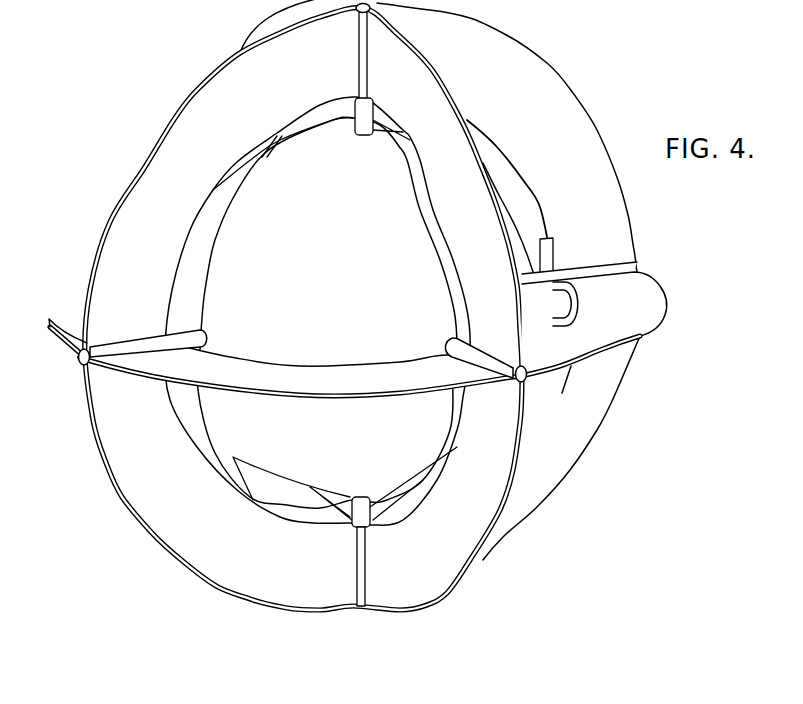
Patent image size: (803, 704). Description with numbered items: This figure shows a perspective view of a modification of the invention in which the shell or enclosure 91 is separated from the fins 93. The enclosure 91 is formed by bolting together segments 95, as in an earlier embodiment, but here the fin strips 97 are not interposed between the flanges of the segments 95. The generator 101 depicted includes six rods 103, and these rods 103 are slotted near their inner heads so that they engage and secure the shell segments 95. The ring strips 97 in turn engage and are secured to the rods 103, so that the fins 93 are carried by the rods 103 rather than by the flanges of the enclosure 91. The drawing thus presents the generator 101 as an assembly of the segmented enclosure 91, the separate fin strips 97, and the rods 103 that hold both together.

The shell or enclosure 91 is at (413, 210).
The fins 93 is at (520, 440).
The segments 95 is at (253, 187).
The fin strips 97 is at (640, 282).
The generator 101 is at (541, 584).
The rods 103 is at (360, 583).